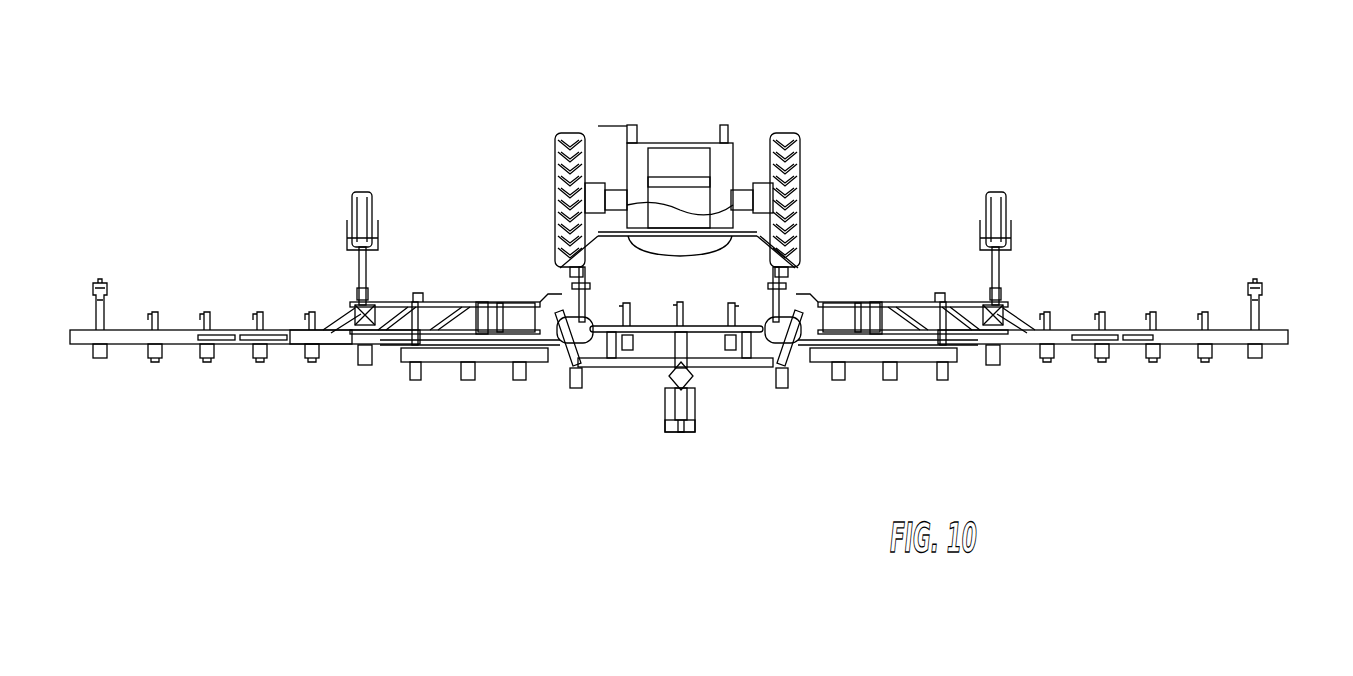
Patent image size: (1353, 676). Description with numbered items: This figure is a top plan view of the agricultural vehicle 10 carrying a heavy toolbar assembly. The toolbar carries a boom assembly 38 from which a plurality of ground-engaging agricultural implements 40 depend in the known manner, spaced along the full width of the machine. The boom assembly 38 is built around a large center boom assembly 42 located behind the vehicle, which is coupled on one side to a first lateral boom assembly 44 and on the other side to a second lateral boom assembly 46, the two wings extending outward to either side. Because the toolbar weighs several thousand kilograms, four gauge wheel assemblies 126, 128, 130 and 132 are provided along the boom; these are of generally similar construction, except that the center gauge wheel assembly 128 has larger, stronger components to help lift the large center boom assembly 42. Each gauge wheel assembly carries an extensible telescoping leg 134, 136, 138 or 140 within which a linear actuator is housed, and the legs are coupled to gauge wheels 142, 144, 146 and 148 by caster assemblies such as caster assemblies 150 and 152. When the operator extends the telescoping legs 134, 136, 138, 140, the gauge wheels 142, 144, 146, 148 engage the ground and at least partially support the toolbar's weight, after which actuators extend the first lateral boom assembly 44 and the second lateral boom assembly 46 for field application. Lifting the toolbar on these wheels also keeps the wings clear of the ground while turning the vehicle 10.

The vehicle 10 is at (745, 100).
The boom assembly 38 is at (245, 326).
The ground-engaging agricultural implements 40 is at (155, 310).
The center boom assembly 42 is at (690, 349).
The first lateral boom assembly 44 is at (312, 380).
The second lateral boom assembly 46 is at (1137, 340).
The gauge wheel assembly 126 is at (412, 275).
The center gauge wheel assembly 128 is at (658, 424).
The gauge wheel assembly 130 is at (954, 281).
The gauge wheel assembly 132 is at (352, 305).
The extensible telescoping leg 134 is at (692, 374).
The extensible telescoping leg 136 is at (1020, 312).
The extensible telescoping leg 138 is at (373, 213).
The extensible telescoping leg 140 is at (666, 395).
The gauge wheel 142 is at (1007, 220).
The gauge wheel 144 is at (372, 262).
The gauge wheel 146 is at (692, 434).
The gauge wheel 148 is at (987, 245).
The caster assembly 150 is at (100, 282).
The caster assembly 152 is at (1255, 282).